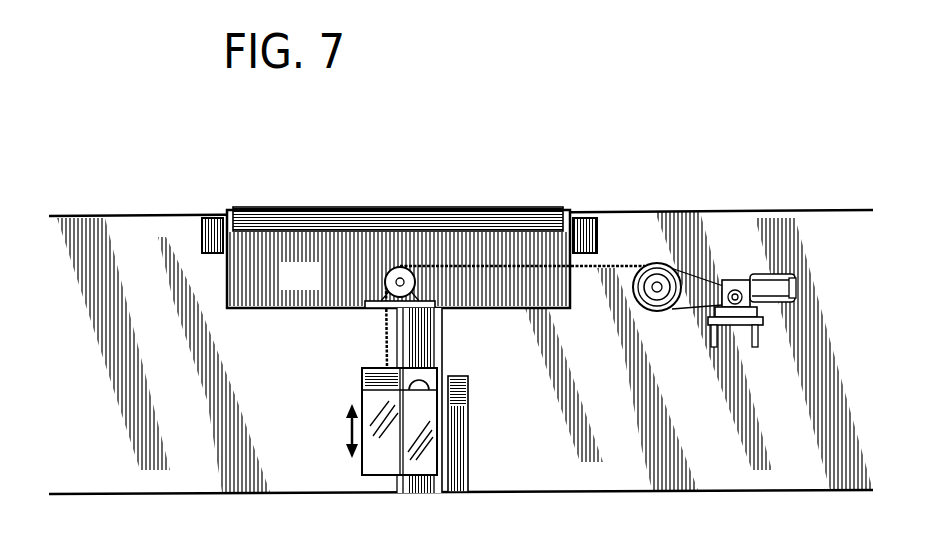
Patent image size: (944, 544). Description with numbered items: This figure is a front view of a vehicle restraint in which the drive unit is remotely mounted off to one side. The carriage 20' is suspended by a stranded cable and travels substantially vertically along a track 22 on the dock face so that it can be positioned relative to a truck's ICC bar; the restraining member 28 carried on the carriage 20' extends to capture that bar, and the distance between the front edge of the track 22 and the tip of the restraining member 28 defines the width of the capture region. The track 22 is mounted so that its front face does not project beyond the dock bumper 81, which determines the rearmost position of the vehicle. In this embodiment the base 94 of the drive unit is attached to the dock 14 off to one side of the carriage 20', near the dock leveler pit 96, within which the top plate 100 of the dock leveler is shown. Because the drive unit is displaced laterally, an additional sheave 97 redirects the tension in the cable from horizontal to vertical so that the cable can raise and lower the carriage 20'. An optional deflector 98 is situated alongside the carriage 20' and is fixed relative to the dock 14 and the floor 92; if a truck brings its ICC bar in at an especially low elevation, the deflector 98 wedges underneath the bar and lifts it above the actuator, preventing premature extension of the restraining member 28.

The dock 14 is at (623, 210).
The carriage 20' is at (378, 405).
The track 22 is at (437, 334).
The restraining member 28 is at (421, 379).
The dock bumper 81 is at (202, 237).
The floor 92 is at (518, 488).
The base 94 is at (761, 315).
The dock leveler pit 96 is at (313, 287).
The sheave 97 is at (388, 272).
The deflector 98 is at (469, 458).
The top plate 100 is at (483, 208).